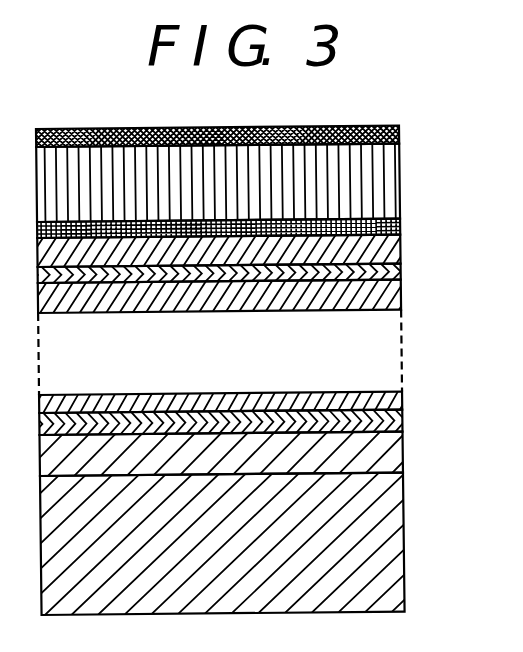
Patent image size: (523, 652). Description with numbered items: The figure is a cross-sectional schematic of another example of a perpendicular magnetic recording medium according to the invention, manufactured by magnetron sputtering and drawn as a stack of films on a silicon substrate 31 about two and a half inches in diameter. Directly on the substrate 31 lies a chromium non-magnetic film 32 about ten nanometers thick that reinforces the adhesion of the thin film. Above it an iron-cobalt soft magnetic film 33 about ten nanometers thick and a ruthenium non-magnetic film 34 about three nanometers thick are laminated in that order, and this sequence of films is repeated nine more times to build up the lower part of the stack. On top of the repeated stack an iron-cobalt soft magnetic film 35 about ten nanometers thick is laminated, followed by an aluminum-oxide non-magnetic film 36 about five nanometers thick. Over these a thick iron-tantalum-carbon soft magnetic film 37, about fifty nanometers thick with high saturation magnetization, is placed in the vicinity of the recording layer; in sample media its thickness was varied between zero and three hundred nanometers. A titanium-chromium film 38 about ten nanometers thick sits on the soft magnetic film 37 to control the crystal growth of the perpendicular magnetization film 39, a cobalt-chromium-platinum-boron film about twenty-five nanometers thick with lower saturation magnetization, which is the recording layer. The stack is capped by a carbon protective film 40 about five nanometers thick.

The substrate 31 is at (402, 530).
The non-magnetic film 32 is at (401, 448).
The soft magnetic film 33 is at (401, 417).
The non-magnetic film 34 is at (401, 401).
The soft magnetic film 35 is at (400, 297).
The non-magnetic film 36 is at (400, 272).
The soft magnetic film 37 is at (400, 254).
The film for controlling the crystal growth of the perpendicular magnetization film 38 is at (400, 225).
The perpendicular magnetization film 39 is at (388, 172).
The protective film 40 is at (400, 133).